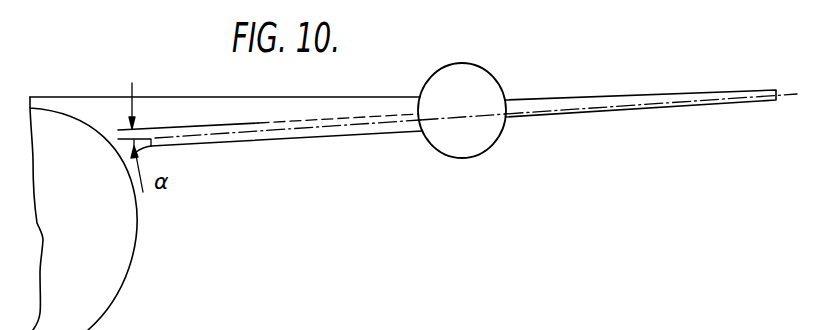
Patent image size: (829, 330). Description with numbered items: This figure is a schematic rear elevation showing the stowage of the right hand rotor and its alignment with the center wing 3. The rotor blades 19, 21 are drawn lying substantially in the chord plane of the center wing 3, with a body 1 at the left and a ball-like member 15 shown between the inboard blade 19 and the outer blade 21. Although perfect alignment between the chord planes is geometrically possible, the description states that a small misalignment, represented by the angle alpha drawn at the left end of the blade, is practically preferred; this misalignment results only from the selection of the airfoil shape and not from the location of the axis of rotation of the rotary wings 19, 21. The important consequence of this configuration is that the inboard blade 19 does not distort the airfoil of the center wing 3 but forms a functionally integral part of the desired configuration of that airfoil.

The body 1 is at (122, 252).
The center wing 3 is at (289, 105).
The ball 15 is at (498, 83).
The inboard blade 19 is at (342, 134).
The rotary wing blade 21 is at (632, 98).